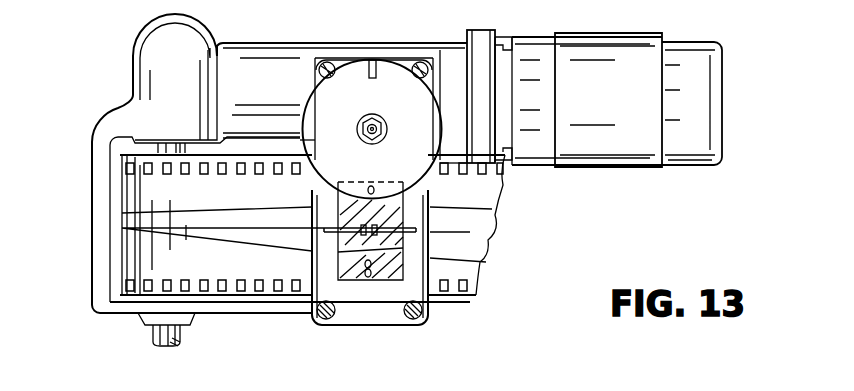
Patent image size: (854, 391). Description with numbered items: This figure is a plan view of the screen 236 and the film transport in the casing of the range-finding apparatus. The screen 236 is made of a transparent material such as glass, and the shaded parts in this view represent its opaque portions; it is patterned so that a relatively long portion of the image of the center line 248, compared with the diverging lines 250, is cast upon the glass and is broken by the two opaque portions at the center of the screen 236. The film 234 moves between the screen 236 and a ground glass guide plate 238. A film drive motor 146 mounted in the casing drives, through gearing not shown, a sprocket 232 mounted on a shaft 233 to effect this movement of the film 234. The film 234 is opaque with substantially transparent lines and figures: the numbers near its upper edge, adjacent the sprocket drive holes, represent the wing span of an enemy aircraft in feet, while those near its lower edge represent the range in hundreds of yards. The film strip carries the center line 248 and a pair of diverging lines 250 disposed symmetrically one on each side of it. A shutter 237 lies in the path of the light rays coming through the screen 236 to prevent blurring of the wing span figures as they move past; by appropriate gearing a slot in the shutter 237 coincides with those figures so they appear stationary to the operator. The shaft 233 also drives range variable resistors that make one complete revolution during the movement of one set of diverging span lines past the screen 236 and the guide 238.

The film drive motor 146 is at (580, 45).
The sprocket 232 is at (122, 287).
The shaft 233 is at (175, 343).
The film 234 is at (480, 286).
The screen 236 is at (350, 313).
The shutter 237 is at (326, 97).
The ground glass guide plate 238 is at (390, 275).
The center line 248 is at (468, 232).
The diverging lines 250 is at (470, 211).